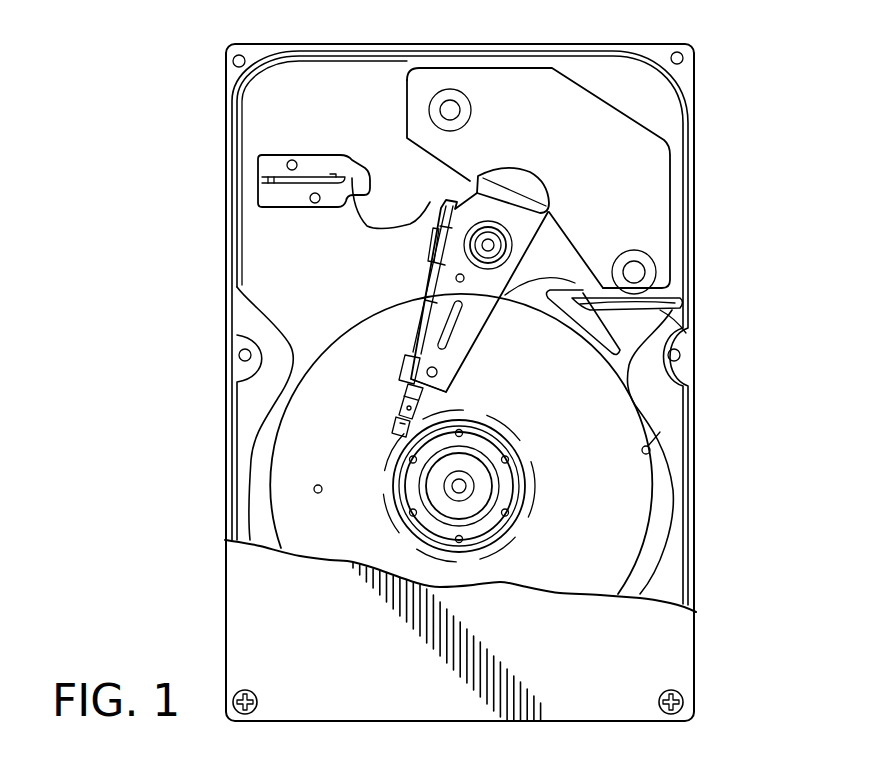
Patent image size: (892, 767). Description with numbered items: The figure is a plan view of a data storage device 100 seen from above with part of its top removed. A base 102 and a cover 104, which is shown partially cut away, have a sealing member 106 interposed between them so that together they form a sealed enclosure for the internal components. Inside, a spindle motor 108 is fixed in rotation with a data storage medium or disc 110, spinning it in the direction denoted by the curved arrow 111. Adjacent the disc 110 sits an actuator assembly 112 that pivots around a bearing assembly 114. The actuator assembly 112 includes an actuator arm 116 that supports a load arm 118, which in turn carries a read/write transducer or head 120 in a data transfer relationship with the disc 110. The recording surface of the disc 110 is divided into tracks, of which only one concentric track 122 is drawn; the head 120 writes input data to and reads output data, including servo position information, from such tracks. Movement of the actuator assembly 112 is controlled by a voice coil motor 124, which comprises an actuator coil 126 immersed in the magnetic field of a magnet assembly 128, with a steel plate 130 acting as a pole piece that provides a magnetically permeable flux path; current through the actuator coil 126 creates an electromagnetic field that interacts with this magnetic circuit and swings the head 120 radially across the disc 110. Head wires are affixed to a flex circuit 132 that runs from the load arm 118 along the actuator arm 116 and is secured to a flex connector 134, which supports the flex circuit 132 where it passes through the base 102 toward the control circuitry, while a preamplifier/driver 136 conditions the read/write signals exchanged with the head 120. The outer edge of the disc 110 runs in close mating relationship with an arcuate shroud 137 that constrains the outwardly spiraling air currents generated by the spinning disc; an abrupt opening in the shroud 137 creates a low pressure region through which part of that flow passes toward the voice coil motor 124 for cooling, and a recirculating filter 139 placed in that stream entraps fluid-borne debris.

The data storage device 100 is at (188, 40).
The base 102 is at (285, 120).
The cover 104 is at (260, 590).
The sealing member 106 is at (245, 85).
The spindle motor 108 is at (498, 432).
The data storage medium 110 is at (652, 498).
The direction of rotation 111 is at (343, 533).
The actuator assembly 112 is at (488, 319).
The bearing assembly 114 is at (530, 233).
The actuator arm 116 is at (462, 348).
The load arm 118 is at (406, 404).
The read/write transducer 120 is at (394, 428).
The track 122 is at (524, 494).
The voice coil motor 124 is at (668, 136).
The actuator coil 126 is at (410, 132).
The magnet assembly 128 is at (534, 88).
The steel plate 130 is at (660, 192).
The flex circuit 132 is at (347, 221).
The flex connector 134 is at (260, 190).
The preamplifier/driver 136 is at (432, 240).
The shroud 137 is at (650, 452).
The recirculating filter 139 is at (652, 312).